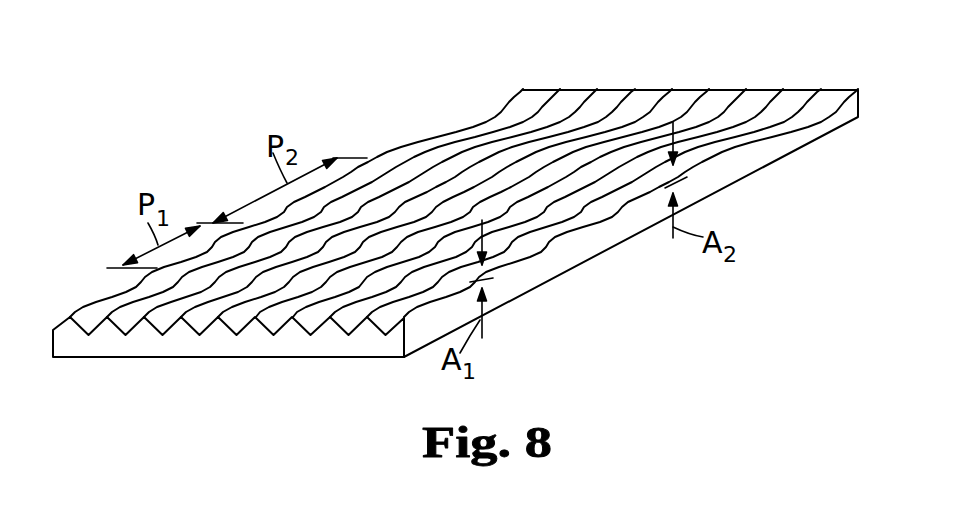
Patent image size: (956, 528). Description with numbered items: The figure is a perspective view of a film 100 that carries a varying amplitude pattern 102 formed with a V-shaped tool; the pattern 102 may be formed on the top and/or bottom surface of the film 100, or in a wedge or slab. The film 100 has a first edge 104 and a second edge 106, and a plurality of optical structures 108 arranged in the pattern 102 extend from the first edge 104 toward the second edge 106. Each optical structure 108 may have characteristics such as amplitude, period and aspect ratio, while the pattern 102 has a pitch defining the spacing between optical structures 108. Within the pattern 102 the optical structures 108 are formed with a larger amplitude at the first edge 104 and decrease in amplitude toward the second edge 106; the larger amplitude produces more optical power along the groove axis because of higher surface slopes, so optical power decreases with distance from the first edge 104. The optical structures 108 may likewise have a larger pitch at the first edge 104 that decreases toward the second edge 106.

The film 100 is at (465, 202).
The varying amplitude pattern 102 is at (436, 137).
The first edge 104 is at (360, 342).
The second edge 106 is at (861, 103).
The optical structures 108 is at (540, 225).